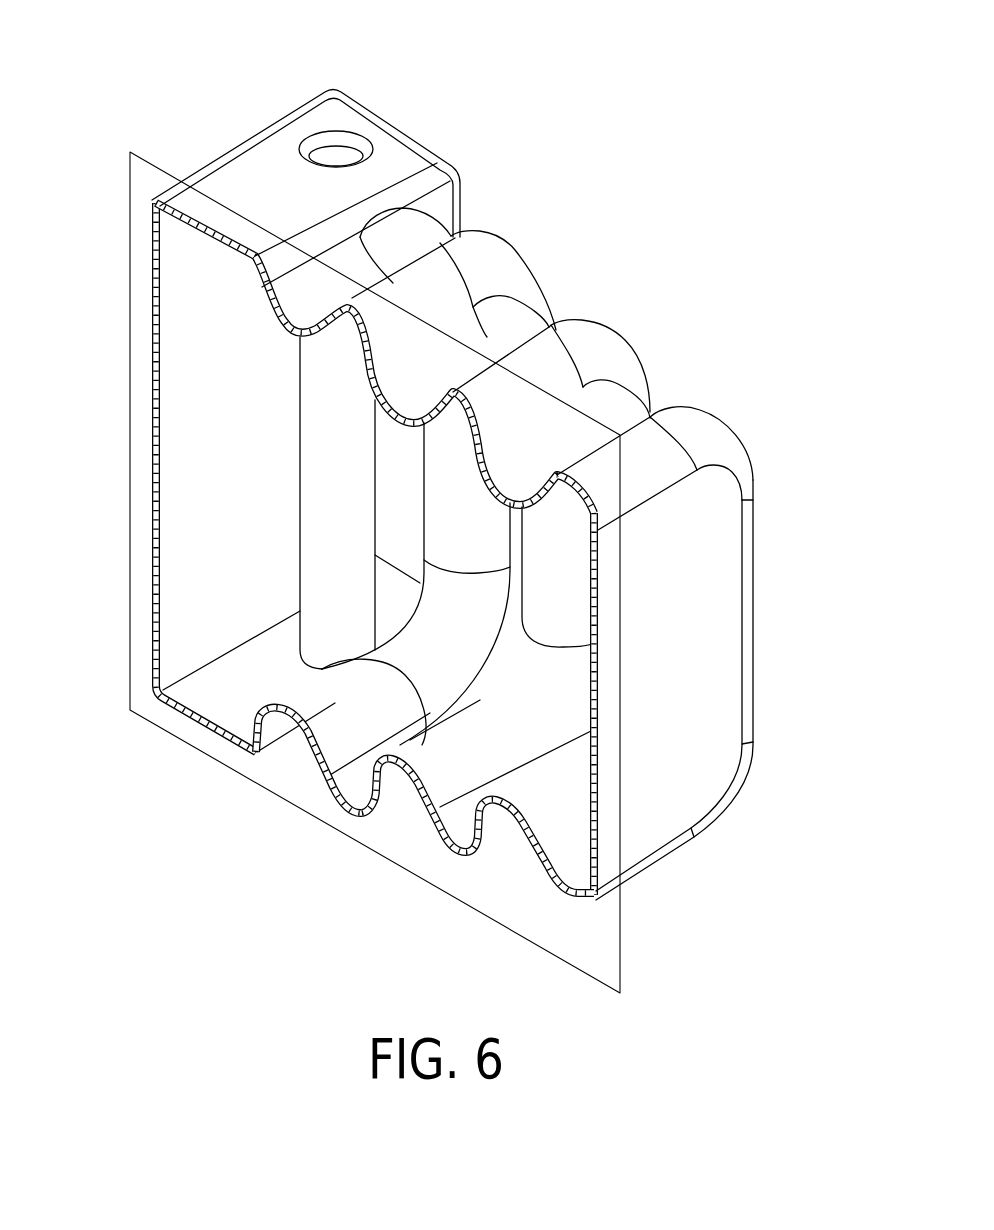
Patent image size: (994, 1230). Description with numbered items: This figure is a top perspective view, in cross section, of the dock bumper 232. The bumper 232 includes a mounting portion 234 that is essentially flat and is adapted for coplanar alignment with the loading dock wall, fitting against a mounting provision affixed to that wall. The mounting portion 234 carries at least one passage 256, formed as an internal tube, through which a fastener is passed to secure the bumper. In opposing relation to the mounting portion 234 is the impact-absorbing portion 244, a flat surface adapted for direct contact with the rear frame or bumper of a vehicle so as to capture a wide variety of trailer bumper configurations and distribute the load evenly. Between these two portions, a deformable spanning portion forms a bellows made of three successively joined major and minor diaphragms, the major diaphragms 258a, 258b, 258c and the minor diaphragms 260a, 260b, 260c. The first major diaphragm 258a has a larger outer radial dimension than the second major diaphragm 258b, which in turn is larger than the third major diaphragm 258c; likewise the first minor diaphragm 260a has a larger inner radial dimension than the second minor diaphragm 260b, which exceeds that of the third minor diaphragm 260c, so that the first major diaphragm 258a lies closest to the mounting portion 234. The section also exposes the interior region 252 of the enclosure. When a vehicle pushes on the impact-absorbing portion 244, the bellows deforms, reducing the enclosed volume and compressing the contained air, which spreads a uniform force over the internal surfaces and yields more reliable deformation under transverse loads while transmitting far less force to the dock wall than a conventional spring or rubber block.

The bumper 232 is at (445, 501).
The mounting portion 234 is at (262, 157).
The impact-absorbing portion 244 is at (714, 648).
The interior cavity 252 is at (262, 568).
The passage 256 is at (327, 470).
The first major diaphragm 258a is at (497, 248).
The second major diaphragm 258b is at (607, 343).
The third major diaphragm 258c is at (690, 425).
The first minor diaphragm 260a is at (330, 706).
The second minor diaphragm 260b is at (440, 765).
The third minor diaphragm 260c is at (525, 812).